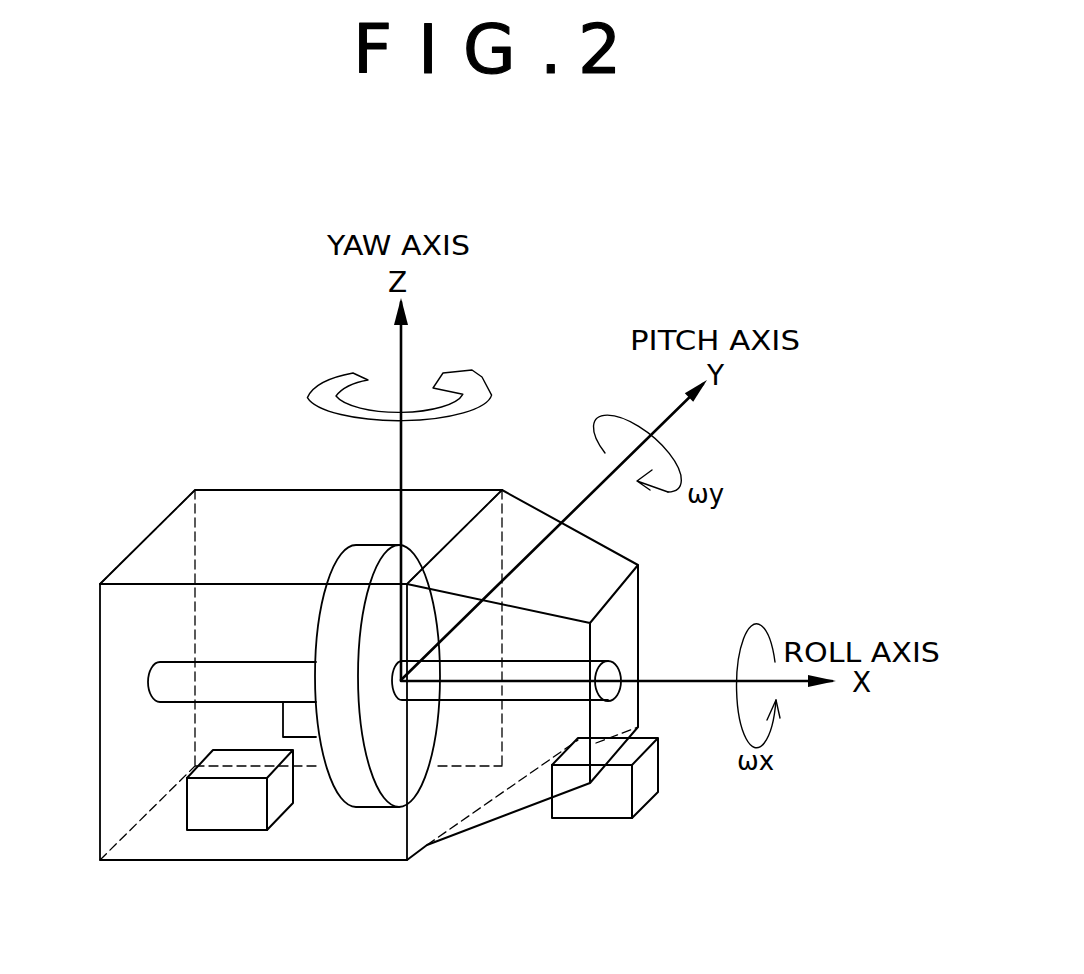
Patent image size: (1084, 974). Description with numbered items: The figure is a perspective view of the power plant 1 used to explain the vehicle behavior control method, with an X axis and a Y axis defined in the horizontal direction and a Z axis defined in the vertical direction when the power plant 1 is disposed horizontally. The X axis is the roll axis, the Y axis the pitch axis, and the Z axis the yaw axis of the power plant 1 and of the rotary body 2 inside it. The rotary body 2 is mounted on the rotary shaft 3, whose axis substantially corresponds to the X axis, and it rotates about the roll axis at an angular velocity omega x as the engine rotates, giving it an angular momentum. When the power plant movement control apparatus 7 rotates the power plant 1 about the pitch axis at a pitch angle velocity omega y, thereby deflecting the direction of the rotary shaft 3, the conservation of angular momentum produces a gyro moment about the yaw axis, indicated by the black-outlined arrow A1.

The power plant 1 is at (160, 540).
The rotary body 2 is at (362, 553).
The rotary shaft 3 is at (177, 667).
The power plant movement control apparatus 7 is at (230, 817).
The black-outlined arrow A1 is at (413, 387).